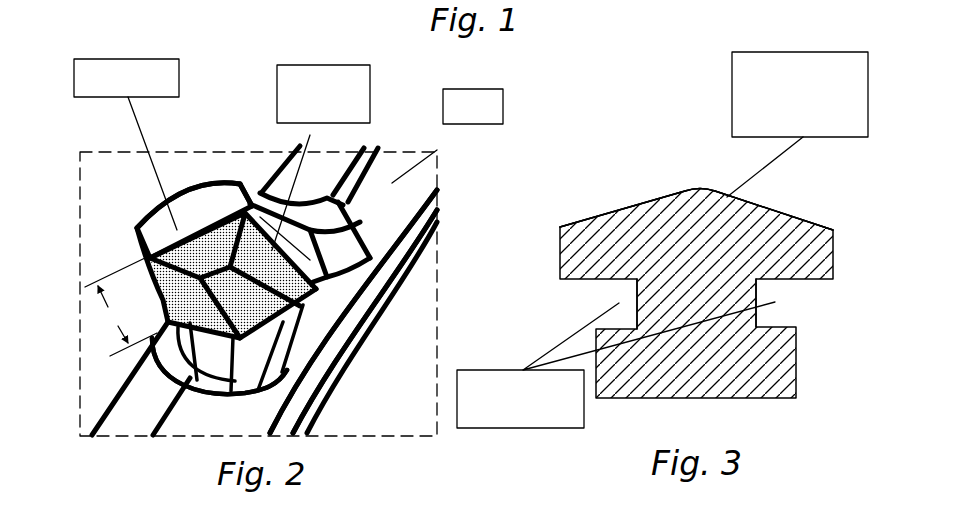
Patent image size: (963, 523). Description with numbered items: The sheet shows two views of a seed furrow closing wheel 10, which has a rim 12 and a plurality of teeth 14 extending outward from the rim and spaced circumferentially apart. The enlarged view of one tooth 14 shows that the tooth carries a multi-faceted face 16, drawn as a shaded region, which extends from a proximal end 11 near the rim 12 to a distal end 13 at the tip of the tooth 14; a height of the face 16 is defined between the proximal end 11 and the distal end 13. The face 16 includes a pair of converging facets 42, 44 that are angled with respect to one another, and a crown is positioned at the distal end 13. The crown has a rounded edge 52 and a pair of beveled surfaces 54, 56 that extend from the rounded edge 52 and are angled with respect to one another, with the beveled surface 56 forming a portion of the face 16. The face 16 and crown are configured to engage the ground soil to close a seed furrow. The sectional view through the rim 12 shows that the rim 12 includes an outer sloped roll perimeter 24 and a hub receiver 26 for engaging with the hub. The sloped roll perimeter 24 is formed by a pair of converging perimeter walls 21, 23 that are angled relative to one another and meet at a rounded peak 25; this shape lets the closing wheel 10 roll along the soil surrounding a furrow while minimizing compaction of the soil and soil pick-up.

In FIG. 2, the seed furrow closing wheel 10 is at (86, 58).
In FIG. 2, the proximal end 11 is at (339, 331).
In FIG. 2, the rim 12 is at (492, 88).
In FIG. 3, the rim 12 is at (647, 170).
In FIG. 2, the distal end 13 is at (130, 250).
In FIG. 2, the tooth 14 is at (220, 155).
In FIG. 2, the multi-faceted face 16 is at (345, 65).
In FIG. 3, the perimeter wall 21 is at (612, 210).
In FIG. 3, the perimeter wall 23 is at (793, 213).
In FIG. 3, the sloped roll perimeter 24 is at (840, 50).
In FIG. 3, the rounded peak 25 is at (695, 185).
In FIG. 3, the hub receiver 26 is at (473, 370).
In FIG. 2, the converging facet 42 is at (360, 313).
In FIG. 2, the converging facet 44 is at (220, 330).
In FIG. 2, the rounded edge 52 is at (157, 225).
In FIG. 2, the beveled surface 54 is at (185, 190).
In FIG. 2, the beveled surface 56 is at (253, 185).